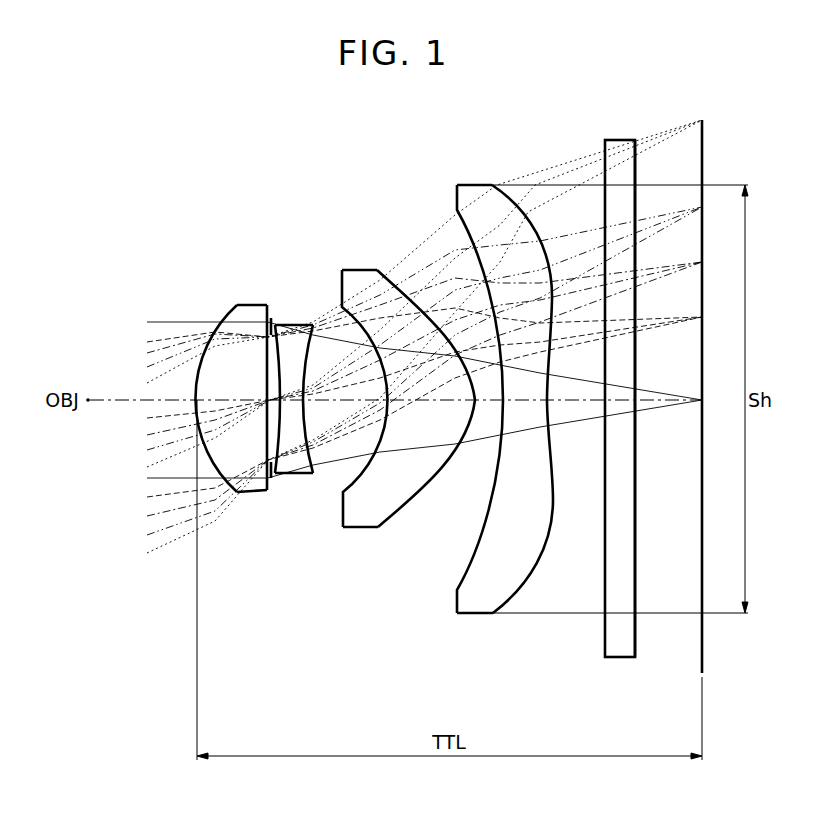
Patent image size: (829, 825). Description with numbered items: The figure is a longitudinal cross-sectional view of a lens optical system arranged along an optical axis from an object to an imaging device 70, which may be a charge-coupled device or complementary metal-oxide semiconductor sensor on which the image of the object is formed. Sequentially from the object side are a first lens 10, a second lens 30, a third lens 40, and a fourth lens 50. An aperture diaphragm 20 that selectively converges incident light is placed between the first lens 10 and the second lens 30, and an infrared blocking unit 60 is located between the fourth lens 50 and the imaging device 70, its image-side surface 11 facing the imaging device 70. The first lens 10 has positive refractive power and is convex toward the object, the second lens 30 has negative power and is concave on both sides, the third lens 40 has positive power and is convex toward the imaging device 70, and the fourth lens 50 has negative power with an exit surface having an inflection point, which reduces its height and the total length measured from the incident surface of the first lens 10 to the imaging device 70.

The first lens 10 is at (231, 396).
The image-side surface of the infrared blocking unit 11 is at (637, 168).
The aperture diaphragm 20 is at (271, 480).
The second lens 30 is at (299, 392).
The third lens 40 is at (395, 397).
The fourth lens 50 is at (485, 394).
The infrared blocking unit 60 is at (620, 660).
The imaging device 70 is at (699, 655).